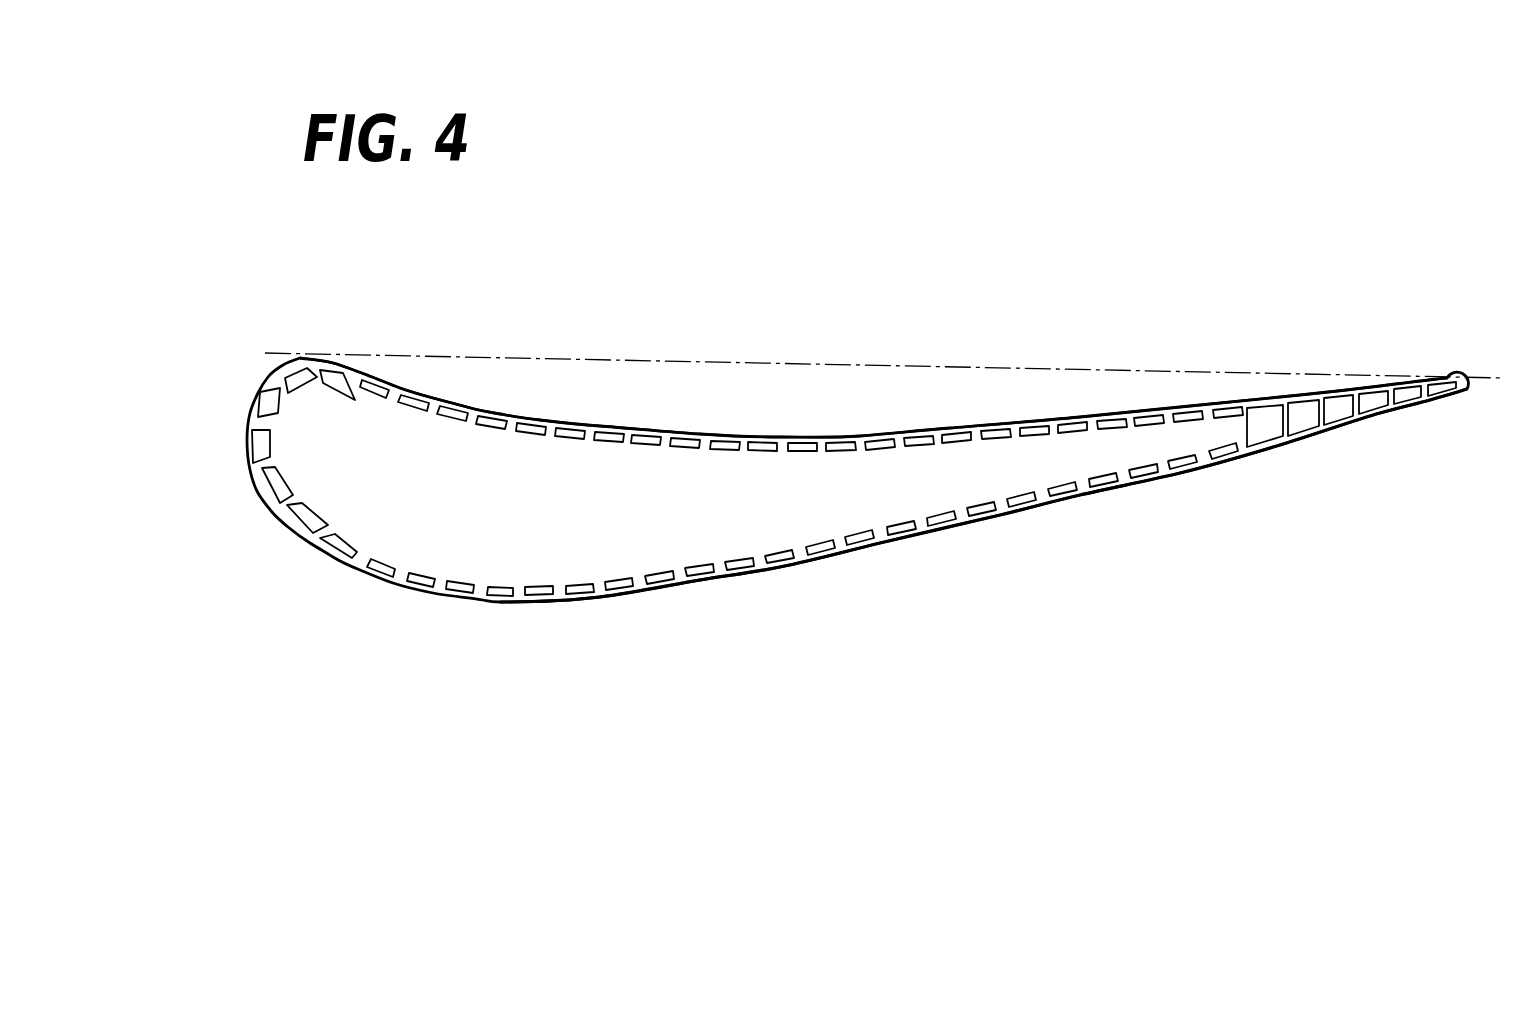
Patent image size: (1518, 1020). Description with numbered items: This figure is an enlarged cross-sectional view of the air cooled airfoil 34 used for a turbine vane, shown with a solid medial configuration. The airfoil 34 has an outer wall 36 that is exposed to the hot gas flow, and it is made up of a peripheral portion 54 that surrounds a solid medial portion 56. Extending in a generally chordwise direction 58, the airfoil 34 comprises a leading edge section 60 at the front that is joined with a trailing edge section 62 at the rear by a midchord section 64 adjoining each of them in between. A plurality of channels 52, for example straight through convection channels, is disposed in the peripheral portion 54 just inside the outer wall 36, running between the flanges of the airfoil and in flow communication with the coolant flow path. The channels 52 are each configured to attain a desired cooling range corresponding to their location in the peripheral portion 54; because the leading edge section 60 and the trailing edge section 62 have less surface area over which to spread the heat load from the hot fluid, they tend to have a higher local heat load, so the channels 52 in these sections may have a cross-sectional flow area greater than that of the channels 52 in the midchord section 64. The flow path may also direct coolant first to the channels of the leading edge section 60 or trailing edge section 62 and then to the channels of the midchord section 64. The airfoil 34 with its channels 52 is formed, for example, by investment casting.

The airfoil 34 is at (922, 252).
The outer wall 36 is at (391, 384).
The channel 52 is at (271, 392).
The peripheral portion 54 is at (448, 400).
The medial portion 56 is at (398, 540).
The chordwise direction 58 is at (633, 360).
The leading edge section 60 is at (268, 536).
The trailing edge section 62 is at (1362, 358).
The midchord section 64 is at (782, 420).